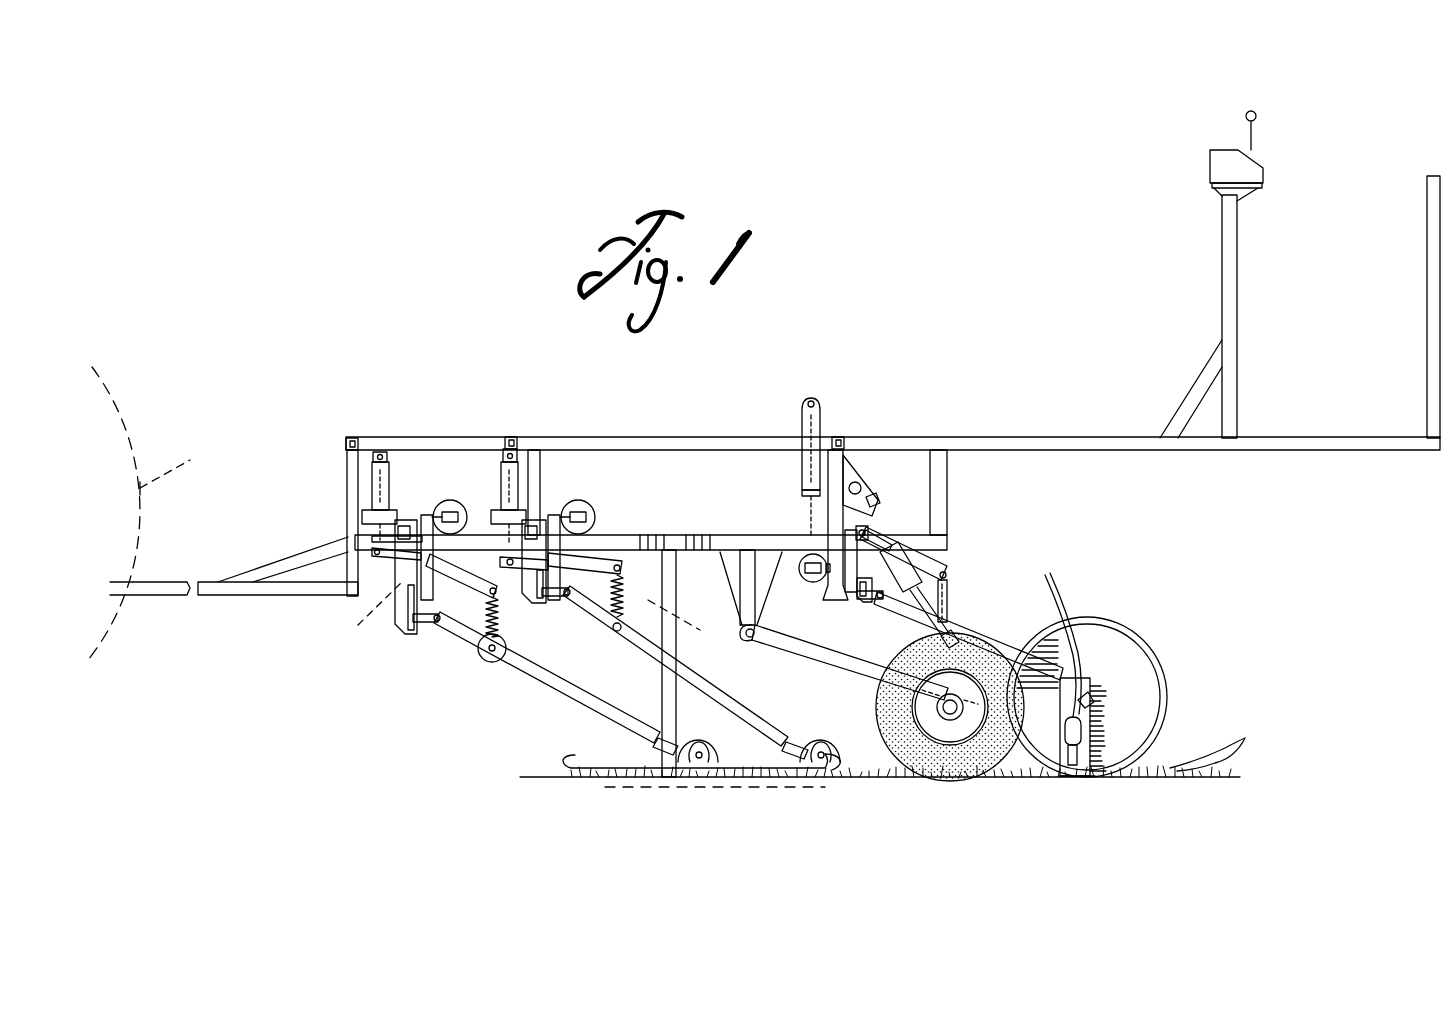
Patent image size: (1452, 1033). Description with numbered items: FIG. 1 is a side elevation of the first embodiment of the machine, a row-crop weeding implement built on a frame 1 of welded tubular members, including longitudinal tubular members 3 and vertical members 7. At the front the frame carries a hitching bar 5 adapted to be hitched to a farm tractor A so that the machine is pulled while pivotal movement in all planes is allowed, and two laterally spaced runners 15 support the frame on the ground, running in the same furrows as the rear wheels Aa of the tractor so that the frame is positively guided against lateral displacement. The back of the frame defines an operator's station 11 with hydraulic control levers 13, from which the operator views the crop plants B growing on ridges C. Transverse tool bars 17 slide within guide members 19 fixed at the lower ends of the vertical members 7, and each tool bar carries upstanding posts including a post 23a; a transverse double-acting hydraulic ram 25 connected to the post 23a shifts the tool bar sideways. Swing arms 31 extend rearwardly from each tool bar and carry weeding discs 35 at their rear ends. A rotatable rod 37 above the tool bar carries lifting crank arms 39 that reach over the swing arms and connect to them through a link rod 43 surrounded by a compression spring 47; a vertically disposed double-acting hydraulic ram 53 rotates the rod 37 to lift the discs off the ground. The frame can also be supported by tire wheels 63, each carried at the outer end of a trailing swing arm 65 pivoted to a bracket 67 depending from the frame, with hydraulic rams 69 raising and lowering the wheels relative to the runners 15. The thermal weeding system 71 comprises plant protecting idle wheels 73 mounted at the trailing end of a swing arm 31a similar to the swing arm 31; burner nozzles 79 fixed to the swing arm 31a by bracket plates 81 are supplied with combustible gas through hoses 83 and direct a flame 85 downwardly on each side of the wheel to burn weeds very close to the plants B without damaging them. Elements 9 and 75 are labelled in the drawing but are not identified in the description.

The frame 1 is at (936, 404).
The longitudinal tubular members 3 is at (356, 435).
The hitching bar 5 is at (1018, 449).
The vertical members 7 is at (539, 450).
The hitch 9 is at (163, 596).
The operator's station 11 is at (1337, 438).
The hydraulic control levers 13 is at (1256, 126).
The runners 15 is at (574, 760).
The tool bar 17 is at (422, 625).
The guide members 19 is at (405, 630).
The post 23a is at (413, 548).
The double-acting hydraulic ram 25 is at (452, 500).
The swing arm 31 is at (535, 675).
The swing arm 31a is at (955, 637).
The disc 35 is at (726, 774).
The rotatable rod 37 is at (360, 612).
The lifting crank arm 39 is at (610, 555).
The link rod 43 is at (485, 632).
The compression spring 47 is at (490, 652).
The vertical double-acting hydraulic ram 53 is at (382, 487).
The tire wheels 63 is at (910, 776).
The trailing swing arm 65 is at (785, 648).
The bracket 67 is at (741, 568).
The hydraulic rams 69 is at (922, 555).
The thermal weeding system 71 is at (1168, 604).
The plant protecting idle wheels 73 is at (1104, 721).
The brush 75 is at (1135, 712).
The burner nozzles 79 is at (1077, 757).
The bracket plates 81 is at (1078, 708).
The hoses 83 is at (1053, 582).
The flame 85 is at (1053, 778).
The farm tractor A is at (126, 422).
The rear wheels of farm tractor Aa is at (184, 462).
The crop plants B is at (1214, 743).
The ridges C is at (1207, 776).